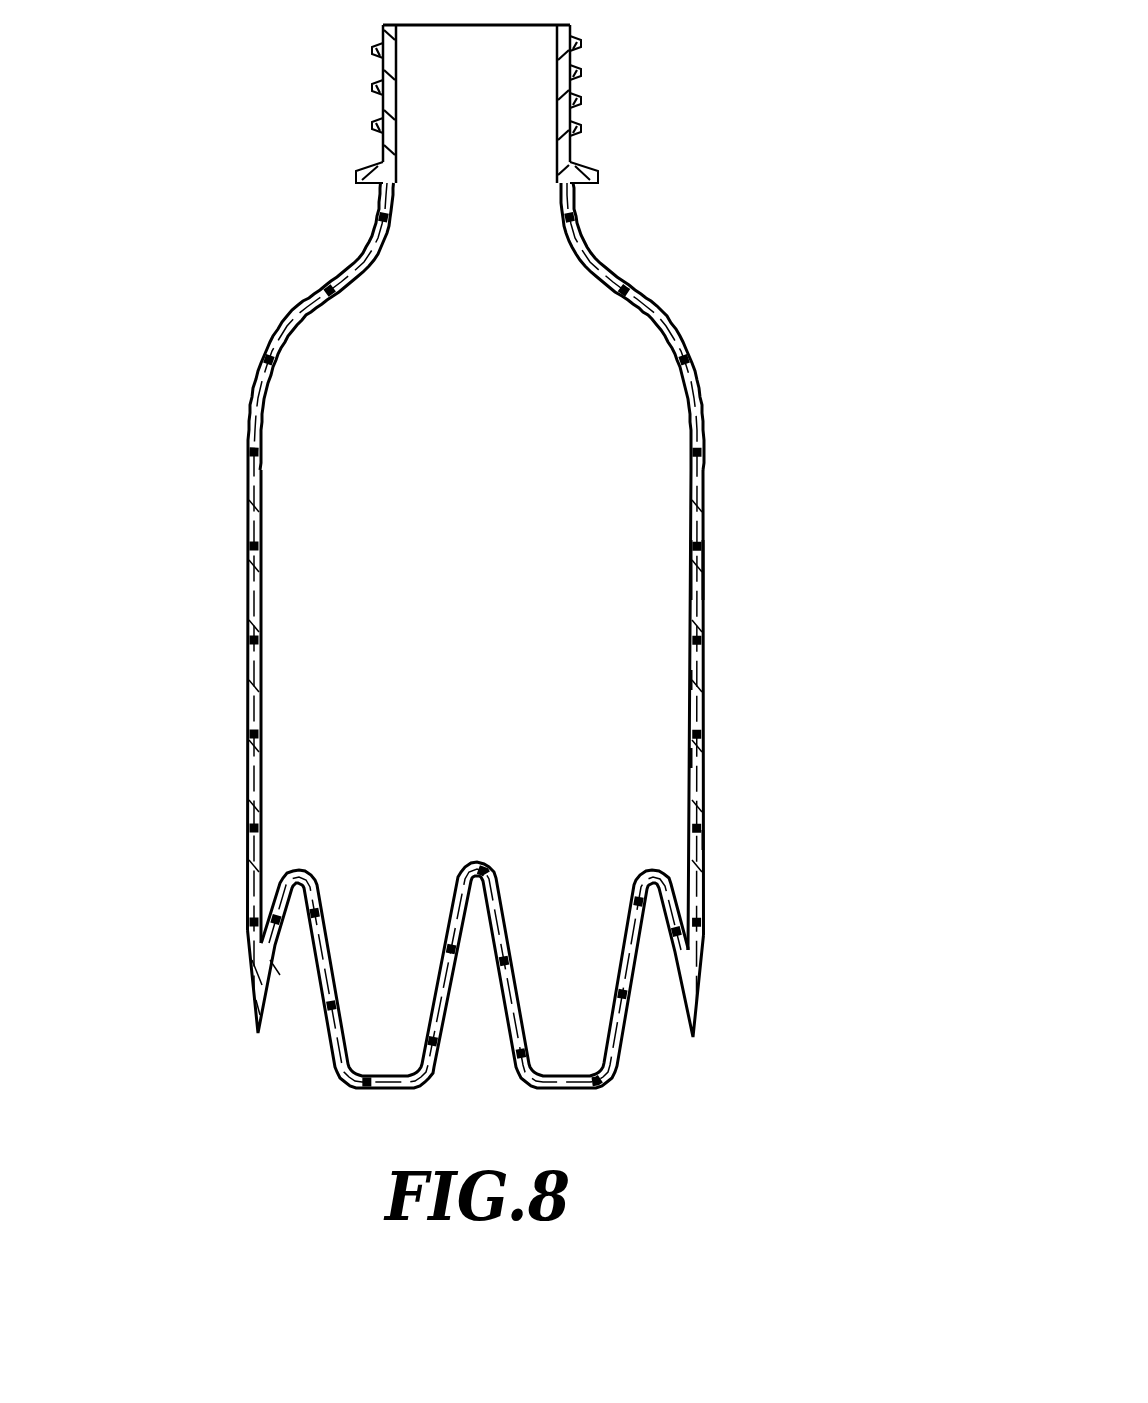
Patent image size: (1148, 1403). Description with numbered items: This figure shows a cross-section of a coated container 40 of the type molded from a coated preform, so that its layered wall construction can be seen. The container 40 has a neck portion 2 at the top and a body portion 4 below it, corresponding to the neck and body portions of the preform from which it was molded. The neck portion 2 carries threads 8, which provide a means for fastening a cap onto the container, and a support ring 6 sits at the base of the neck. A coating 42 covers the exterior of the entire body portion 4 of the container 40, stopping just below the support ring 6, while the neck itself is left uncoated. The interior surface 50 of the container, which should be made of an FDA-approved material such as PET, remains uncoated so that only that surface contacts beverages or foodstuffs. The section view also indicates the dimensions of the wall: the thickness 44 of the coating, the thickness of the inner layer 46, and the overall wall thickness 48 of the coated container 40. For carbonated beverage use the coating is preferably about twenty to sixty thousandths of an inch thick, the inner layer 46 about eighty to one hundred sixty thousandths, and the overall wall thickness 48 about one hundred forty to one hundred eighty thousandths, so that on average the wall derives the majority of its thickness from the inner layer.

The neck portion 2 is at (199, 35).
The body portion 4 is at (200, 1097).
The support ring 6 is at (622, 185).
The threads 8 is at (597, 102).
The coated container 40 is at (737, 422).
The coating 42 is at (702, 947).
The thickness of the coating 44 is at (642, 840).
The inner layer 46 is at (633, 680).
The overall wall thickness 48 is at (633, 758).
The interior surface 50 is at (679, 585).